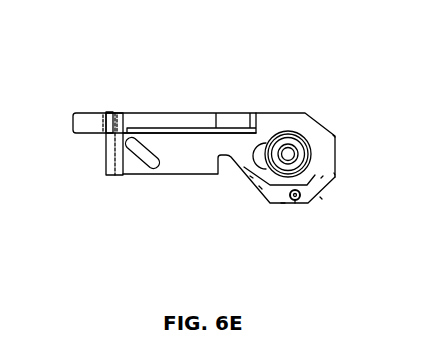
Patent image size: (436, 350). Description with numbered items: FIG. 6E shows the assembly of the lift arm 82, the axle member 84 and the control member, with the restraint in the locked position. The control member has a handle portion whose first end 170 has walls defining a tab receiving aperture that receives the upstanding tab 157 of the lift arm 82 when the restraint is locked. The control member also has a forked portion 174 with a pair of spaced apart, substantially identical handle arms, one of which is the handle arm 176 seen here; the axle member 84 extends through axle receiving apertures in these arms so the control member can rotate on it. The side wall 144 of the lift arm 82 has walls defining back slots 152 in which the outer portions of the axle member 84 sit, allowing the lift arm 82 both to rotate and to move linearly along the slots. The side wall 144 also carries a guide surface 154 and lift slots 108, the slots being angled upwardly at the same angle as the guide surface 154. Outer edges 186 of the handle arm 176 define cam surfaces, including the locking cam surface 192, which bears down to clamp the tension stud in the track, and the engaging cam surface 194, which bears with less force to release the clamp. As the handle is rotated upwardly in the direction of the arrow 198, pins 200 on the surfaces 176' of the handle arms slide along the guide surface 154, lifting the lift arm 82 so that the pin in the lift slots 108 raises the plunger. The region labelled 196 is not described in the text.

The arrow 198 is at (92, 51).
The first end of the handle portion 170 is at (85, 113).
The upstanding tab 157 is at (112, 112).
The lift arm 82 is at (118, 177).
The side wall 144 is at (183, 143).
The lift slots 108 is at (155, 166).
The forked portion 174 is at (330, 150).
The back slots 152 is at (291, 150).
The axle member 84 is at (289, 156).
The pins 200 is at (297, 200).
The corner 196 is at (336, 139).
The inside surface 176' is at (372, 186).
The handle arm 176 is at (362, 198).
The engaging cam surface 194 is at (321, 198).
The locking cam surface 192 is at (283, 203).
The outer edges 186 is at (261, 187).
The guide surface 154 is at (252, 176).